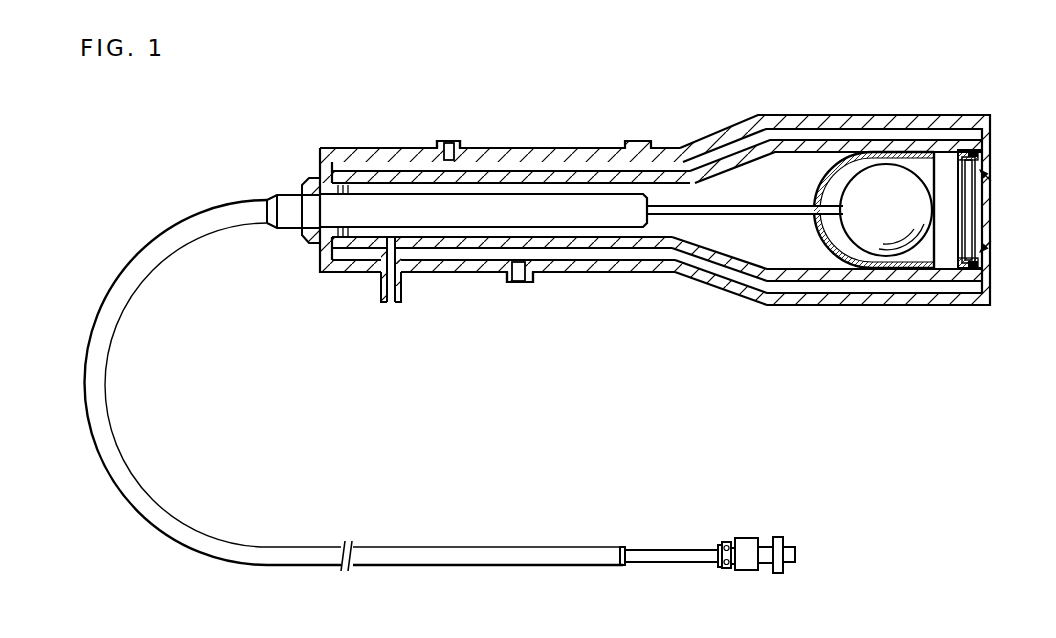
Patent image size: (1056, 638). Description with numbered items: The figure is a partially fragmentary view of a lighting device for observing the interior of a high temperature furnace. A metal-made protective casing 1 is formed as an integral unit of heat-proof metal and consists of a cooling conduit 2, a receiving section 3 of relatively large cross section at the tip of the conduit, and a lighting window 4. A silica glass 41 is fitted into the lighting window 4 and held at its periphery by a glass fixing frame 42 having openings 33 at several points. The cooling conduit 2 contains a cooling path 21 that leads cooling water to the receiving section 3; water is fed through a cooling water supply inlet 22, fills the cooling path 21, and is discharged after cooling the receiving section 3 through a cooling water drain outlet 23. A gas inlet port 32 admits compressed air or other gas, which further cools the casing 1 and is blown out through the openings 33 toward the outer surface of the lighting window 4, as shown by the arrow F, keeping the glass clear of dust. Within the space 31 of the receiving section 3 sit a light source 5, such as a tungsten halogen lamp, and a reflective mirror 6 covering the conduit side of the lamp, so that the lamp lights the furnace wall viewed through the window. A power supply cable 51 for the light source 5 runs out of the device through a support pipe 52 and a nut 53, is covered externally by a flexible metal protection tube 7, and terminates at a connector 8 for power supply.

The metal-made protective casing 1 is at (580, 130).
The cooling conduit 2 is at (408, 140).
The receiving section 3 is at (785, 112).
The lighting window 4 is at (994, 198).
The light source 5 is at (892, 188).
The reflective mirror 6 is at (825, 245).
The flexible metal protection tube 7 is at (96, 396).
The connector 8 is at (750, 545).
The cooling path 21 is at (533, 168).
The cooling water supply inlet 22 is at (460, 140).
The cooling water drain outlet 23 is at (515, 283).
The space 31 is at (802, 165).
The gas inlet port 32 is at (388, 303).
The openings 33 is at (968, 150).
The silica glass 41 is at (972, 224).
The glass fixing frame 42 is at (980, 152).
The power supply cable 51 is at (710, 207).
The support pipe 52 is at (580, 227).
The nut 53 is at (308, 245).
The arrow F is at (990, 212).